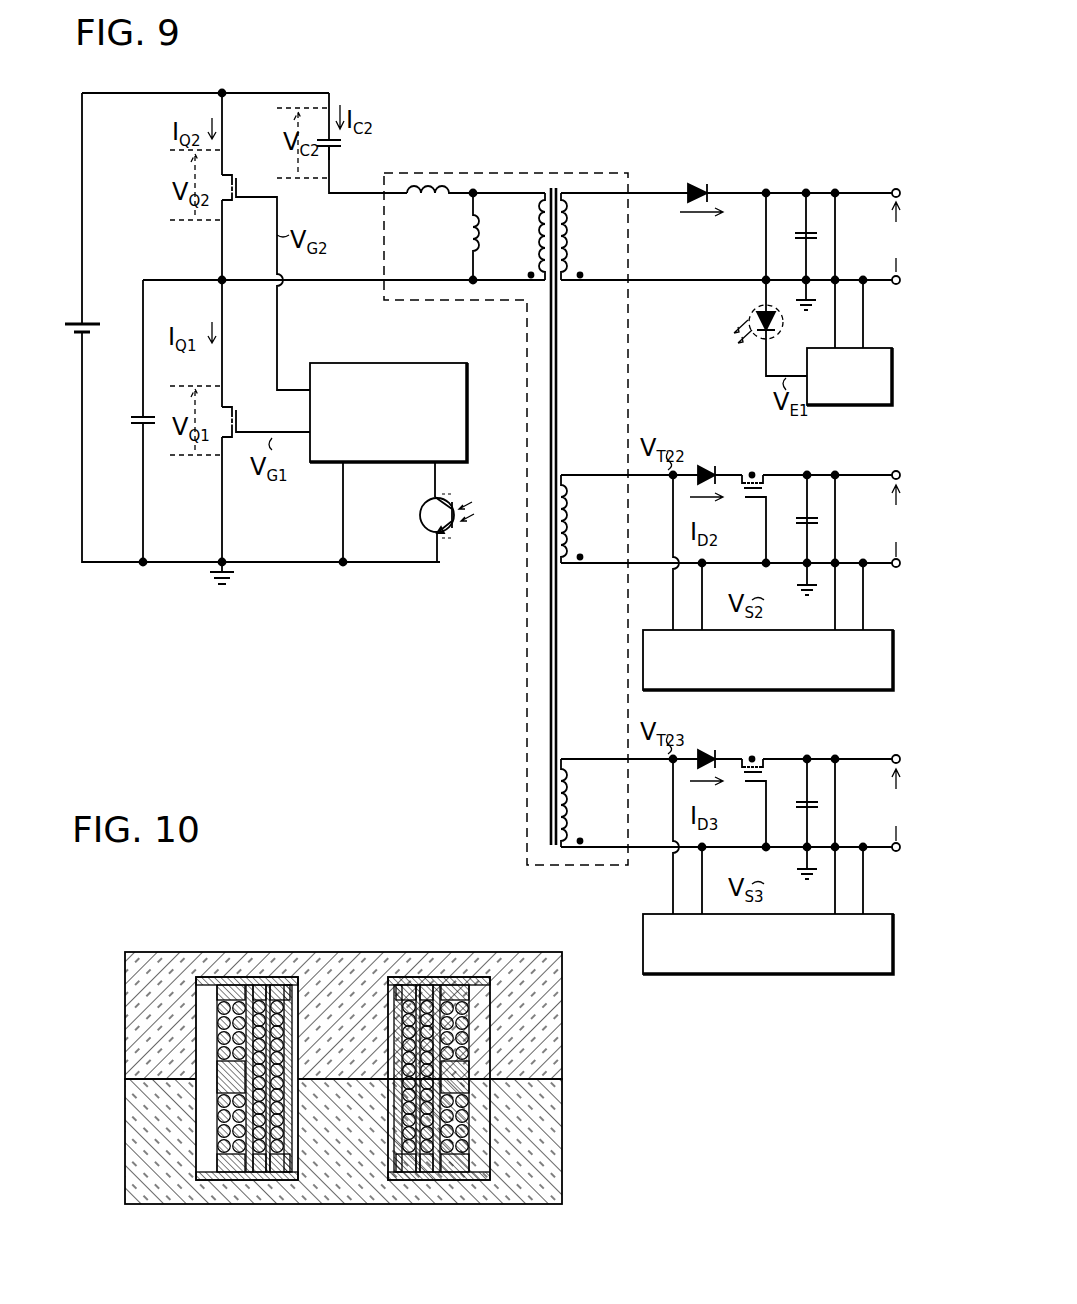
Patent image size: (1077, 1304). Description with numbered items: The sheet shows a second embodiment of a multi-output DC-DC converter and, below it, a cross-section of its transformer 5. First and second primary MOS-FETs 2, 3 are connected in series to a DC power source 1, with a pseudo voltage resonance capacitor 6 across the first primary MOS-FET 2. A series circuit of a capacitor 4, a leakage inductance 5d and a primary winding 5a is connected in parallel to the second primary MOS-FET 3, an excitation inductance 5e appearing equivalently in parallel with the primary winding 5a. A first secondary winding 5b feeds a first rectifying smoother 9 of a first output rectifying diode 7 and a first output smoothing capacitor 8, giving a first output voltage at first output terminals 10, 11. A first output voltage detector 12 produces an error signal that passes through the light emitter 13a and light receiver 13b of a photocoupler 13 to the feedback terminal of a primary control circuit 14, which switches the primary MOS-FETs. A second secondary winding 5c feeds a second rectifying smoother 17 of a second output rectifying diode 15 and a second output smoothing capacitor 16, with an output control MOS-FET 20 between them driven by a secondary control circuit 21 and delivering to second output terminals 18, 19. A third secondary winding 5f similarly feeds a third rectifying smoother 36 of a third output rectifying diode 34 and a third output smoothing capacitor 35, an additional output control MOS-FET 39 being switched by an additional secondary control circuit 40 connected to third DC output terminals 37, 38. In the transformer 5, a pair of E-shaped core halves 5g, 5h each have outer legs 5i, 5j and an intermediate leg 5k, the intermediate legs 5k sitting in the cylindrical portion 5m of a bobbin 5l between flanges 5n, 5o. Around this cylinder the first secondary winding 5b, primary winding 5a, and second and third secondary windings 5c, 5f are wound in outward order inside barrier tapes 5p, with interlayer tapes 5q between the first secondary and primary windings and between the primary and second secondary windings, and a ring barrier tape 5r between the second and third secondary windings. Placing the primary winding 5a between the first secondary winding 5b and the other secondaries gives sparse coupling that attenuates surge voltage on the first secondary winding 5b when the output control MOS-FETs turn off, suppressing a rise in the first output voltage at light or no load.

In FIG. 9, the DC power source 1 is at (66, 323).
In FIG. 9, the first primary MOS-FET 2 is at (238, 404).
In FIG. 9, the second primary MOS-FET 3 is at (238, 176).
In FIG. 9, the capacitor 4 is at (343, 146).
In FIG. 9, the transformer 5 is at (511, 173).
In FIG. 10, the transformer 5 is at (104, 931).
In FIG. 9, the primary winding 5a is at (536, 230).
In FIG. 10, the primary winding 5a is at (259, 990).
In FIG. 9, the first secondary winding 5b is at (591, 228).
In FIG. 10, the first secondary winding 5b is at (277, 990).
In FIG. 9, the second secondary winding 5c is at (591, 512).
In FIG. 10, the second secondary winding 5c is at (228, 1138).
In FIG. 9, the leakage inductance 5d is at (428, 200).
In FIG. 9, the excitation inductance 5e is at (466, 247).
In FIG. 9, the third secondary winding 5f is at (591, 796).
In FIG. 10, the third secondary winding 5f is at (222, 992).
In FIG. 10, the E-shaped core half 5g is at (178, 950).
In FIG. 10, the E-shaped core half 5h is at (486, 1180).
In FIG. 10, the outer leg 5i is at (165, 1030).
In FIG. 10, the outer leg 5j is at (530, 1040).
In FIG. 10, the intermediate leg 5k is at (345, 1010).
In FIG. 10, the bobbin 5l is at (458, 985).
In FIG. 10, the cylindrical portion 5m is at (288, 1176).
In FIG. 10, the flange 5n is at (490, 962).
In FIG. 10, the flange 5o is at (208, 1178).
In FIG. 10, the insulating barrier tape 5p is at (402, 988).
In FIG. 10, the interlayer tape 5q is at (430, 988).
In FIG. 10, the ring barrier tape 5r is at (230, 1078).
In FIG. 9, the pseudo voltage resonance capacitor 6 is at (131, 420).
In FIG. 9, the first output rectifying diode 7 is at (698, 186).
In FIG. 9, the first output smoothing capacitor 8 is at (804, 238).
In FIG. 9, the first rectifying smoother 9 is at (797, 153).
In FIG. 9, the first output terminal 10 is at (896, 188).
In FIG. 9, the first output terminal 11 is at (896, 285).
In FIG. 9, the first output voltage detector 12 is at (868, 390).
In FIG. 9, the photocoupler 13 is at (714, 355).
In FIG. 9, the light emitter 13a is at (749, 317).
In FIG. 9, the light receiver 13b is at (420, 520).
In FIG. 9, the primary control circuit 14 is at (407, 418).
In FIG. 9, the second output rectifying diode 15 is at (707, 471).
In FIG. 9, the second output smoothing capacitor 16 is at (802, 523).
In FIG. 9, the second rectifying smoother 17 is at (797, 463).
In FIG. 9, the second output terminal 18 is at (896, 471).
In FIG. 9, the second output terminal 19 is at (896, 568).
In FIG. 9, the output control MOS-FET 20 is at (757, 471).
In FIG. 9, the secondary control circuit 21 is at (784, 675).
In FIG. 9, the third output rectifying diode 34 is at (707, 755).
In FIG. 9, the third output smoothing capacitor 35 is at (802, 807).
In FIG. 9, the third rectifying smoother 36 is at (797, 747).
In FIG. 9, the third DC output terminal 37 is at (896, 755).
In FIG. 9, the third DC output terminal 38 is at (896, 852).
In FIG. 9, the additional output control MOS-FET 39 is at (757, 755).
In FIG. 9, the additional secondary control circuit 40 is at (784, 959).